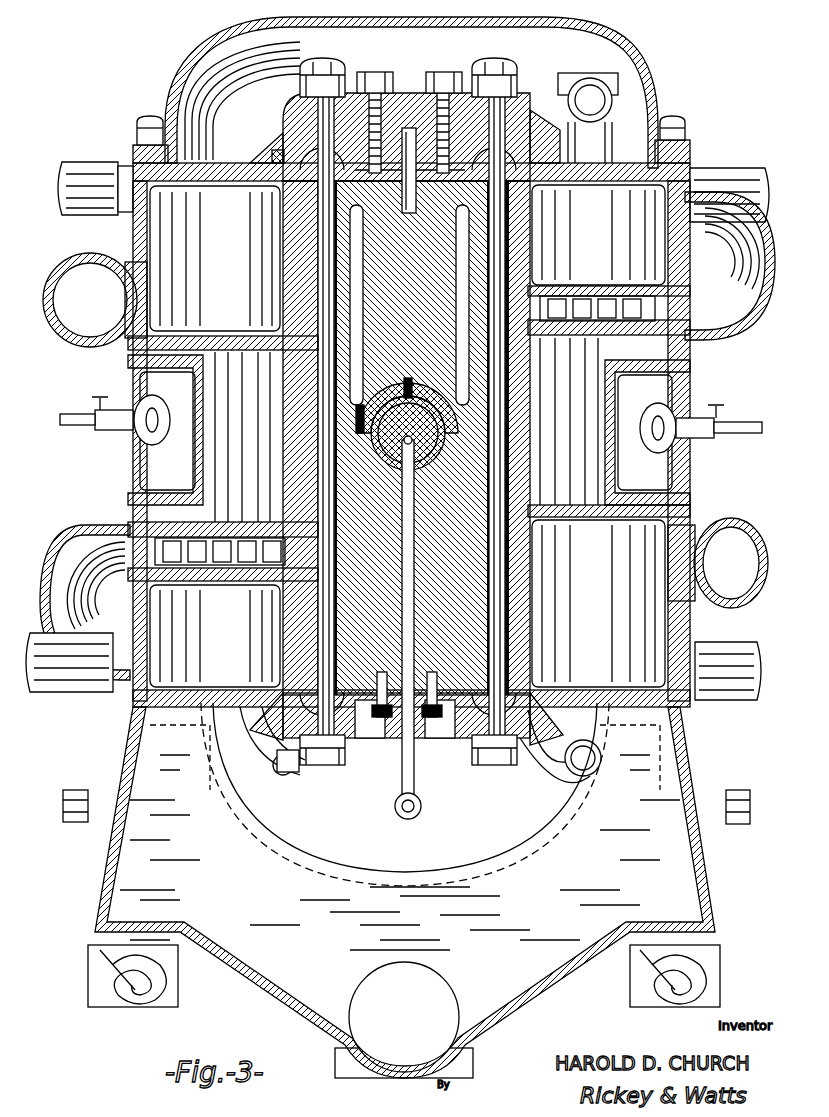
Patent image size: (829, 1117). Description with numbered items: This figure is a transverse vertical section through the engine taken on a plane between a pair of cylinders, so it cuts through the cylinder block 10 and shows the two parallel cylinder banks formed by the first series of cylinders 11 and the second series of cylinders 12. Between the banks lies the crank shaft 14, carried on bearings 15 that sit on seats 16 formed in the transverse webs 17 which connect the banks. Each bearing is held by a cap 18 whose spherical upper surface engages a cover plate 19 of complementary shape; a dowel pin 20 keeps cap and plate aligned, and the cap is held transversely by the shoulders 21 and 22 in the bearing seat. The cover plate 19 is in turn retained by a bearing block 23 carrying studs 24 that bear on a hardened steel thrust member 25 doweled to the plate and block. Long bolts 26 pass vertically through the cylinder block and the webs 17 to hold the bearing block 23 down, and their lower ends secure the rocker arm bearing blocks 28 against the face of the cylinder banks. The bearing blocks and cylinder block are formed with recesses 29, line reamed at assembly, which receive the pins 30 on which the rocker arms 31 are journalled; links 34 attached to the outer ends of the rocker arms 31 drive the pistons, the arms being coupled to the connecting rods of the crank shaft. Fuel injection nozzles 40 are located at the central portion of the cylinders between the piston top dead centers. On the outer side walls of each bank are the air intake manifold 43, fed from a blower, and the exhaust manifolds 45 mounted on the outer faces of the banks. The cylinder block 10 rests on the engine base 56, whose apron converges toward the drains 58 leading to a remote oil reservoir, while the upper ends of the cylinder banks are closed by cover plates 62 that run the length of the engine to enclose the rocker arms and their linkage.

The cylinder block 10 is at (676, 180).
The cylinders 11 is at (598, 281).
The cylinders 12 is at (374, 438).
The crank shaft 14 is at (362, 432).
The bearings 15 is at (388, 457).
The seats 16 is at (378, 470).
The transverse webs 17 is at (380, 497).
The caps 18 is at (380, 392).
The cover plate 19 is at (392, 337).
The dowel pin 20 is at (412, 128).
The shoulder 21 is at (362, 414).
The shoulder 22 is at (455, 417).
The bearing block 23 is at (295, 120).
The studs 24 is at (445, 92).
The thrust member 25 is at (380, 182).
The bolts 26 is at (324, 108).
The rocker arm bearing blocks 28 is at (272, 720).
The recesses 29 is at (242, 702).
The pins 30 is at (273, 156).
The rocker arms 31 is at (268, 143).
The links 34 is at (445, 428).
The fuel injection nozzles 40 is at (98, 418).
The air intake manifold 43 is at (740, 327).
The exhaust manifolds 45 is at (72, 268).
The engine base 56 is at (243, 985).
The drains 58 is at (348, 1065).
The cover plates 62 is at (646, 64).